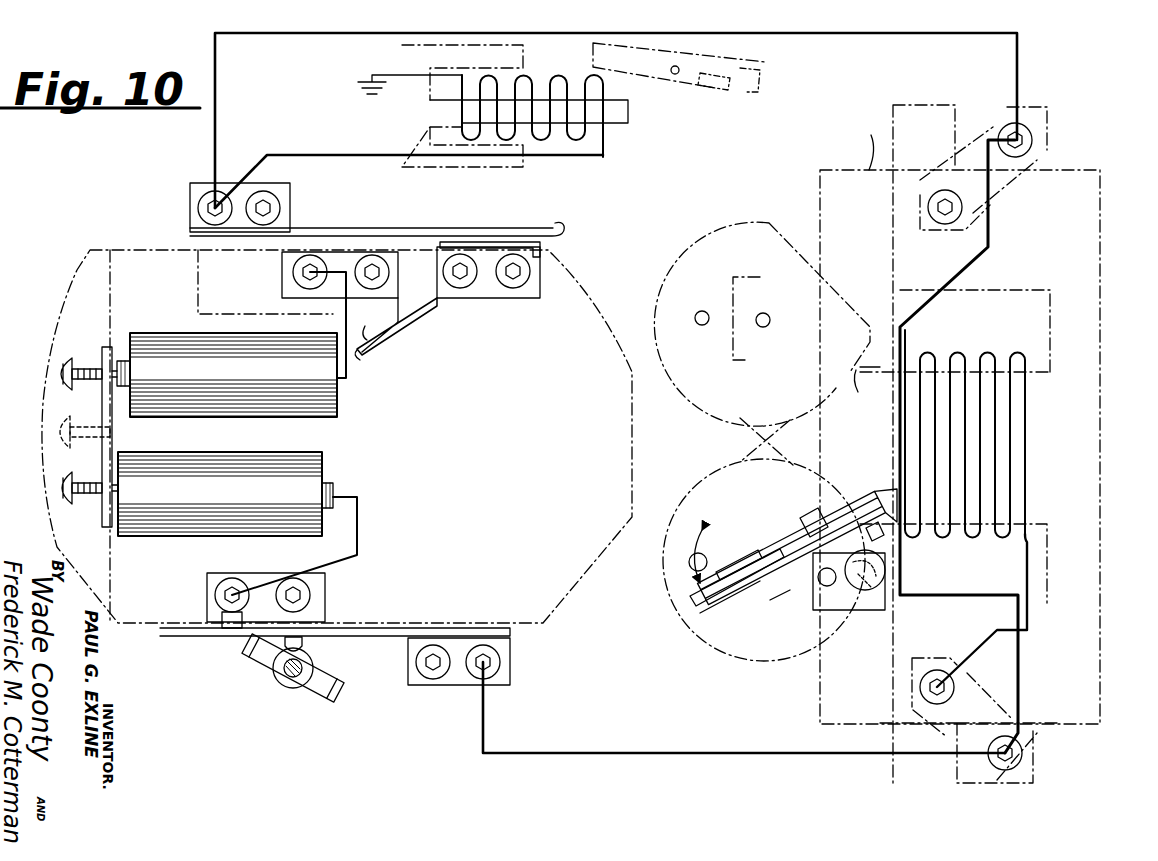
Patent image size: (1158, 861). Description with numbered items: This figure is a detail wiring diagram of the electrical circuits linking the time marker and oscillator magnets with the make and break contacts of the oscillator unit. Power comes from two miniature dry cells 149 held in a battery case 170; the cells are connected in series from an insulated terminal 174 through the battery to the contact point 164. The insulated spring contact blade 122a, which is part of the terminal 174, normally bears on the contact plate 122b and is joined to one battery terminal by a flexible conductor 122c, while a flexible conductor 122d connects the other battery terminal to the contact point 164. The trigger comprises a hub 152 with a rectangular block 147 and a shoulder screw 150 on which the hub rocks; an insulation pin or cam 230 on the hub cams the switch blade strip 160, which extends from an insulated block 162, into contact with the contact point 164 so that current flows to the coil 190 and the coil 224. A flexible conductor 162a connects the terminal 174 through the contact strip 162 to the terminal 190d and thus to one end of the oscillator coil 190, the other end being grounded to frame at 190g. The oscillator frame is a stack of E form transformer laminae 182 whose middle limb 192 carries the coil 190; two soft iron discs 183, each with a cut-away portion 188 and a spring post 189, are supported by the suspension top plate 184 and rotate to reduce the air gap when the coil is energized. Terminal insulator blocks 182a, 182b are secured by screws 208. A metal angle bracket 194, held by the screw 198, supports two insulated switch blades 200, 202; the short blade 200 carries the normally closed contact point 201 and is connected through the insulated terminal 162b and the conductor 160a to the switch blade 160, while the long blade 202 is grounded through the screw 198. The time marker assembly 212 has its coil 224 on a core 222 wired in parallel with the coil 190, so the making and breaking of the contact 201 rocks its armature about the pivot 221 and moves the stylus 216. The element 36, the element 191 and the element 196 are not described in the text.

The thermostat assembly 36 is at (795, 186).
The spring contact blade 122a is at (430, 312).
The contact plate 122b is at (364, 348).
The flexible conductor 122c is at (330, 312).
The flexible conductor 122d is at (355, 560).
The rectangular block 147 is at (338, 690).
The miniature dry cells 149 is at (208, 410).
The shoulder screw 150 is at (300, 686).
The hub 152 is at (282, 686).
The switch blade strip 160 is at (488, 632).
The conductor 160a is at (696, 752).
The insulated block 162 is at (476, 236).
The flexible conductor 162a is at (216, 108).
The insulated terminal 162b is at (1000, 775).
The contact point 164 is at (192, 620).
The battery case 170 is at (160, 246).
The insulated terminal 174 is at (545, 252).
The E form transformer laminae 182 is at (1068, 748).
The terminal insulator block 182a is at (1005, 108).
The terminal insulator block 182b is at (1005, 700).
The soft iron discs 183 is at (716, 240).
The suspension top plate 184 is at (863, 143).
The cut-away portion 188 is at (776, 224).
The spring post 189 is at (695, 318).
The electromagnetic coil 190 is at (1018, 452).
The terminal 190d is at (1022, 122).
The ground connection 190g is at (920, 685).
The cross pin 191 is at (738, 445).
The middle limb 192 is at (847, 374).
The metal angle bracket 194 is at (848, 498).
The switch housing 196 is at (765, 608).
The screw 198 is at (795, 596).
The switch blade 200 is at (720, 568).
The contact point 201 is at (742, 560).
The switch blade 202 is at (750, 587).
The screws 208 is at (936, 665).
The time marker assembly 212 is at (392, 108).
The stylus 216 is at (792, 86).
The pivot 221 is at (698, 64).
The core 222 is at (630, 118).
The magnet coil 224 is at (572, 54).
The insulation pin or cam 230 is at (302, 646).